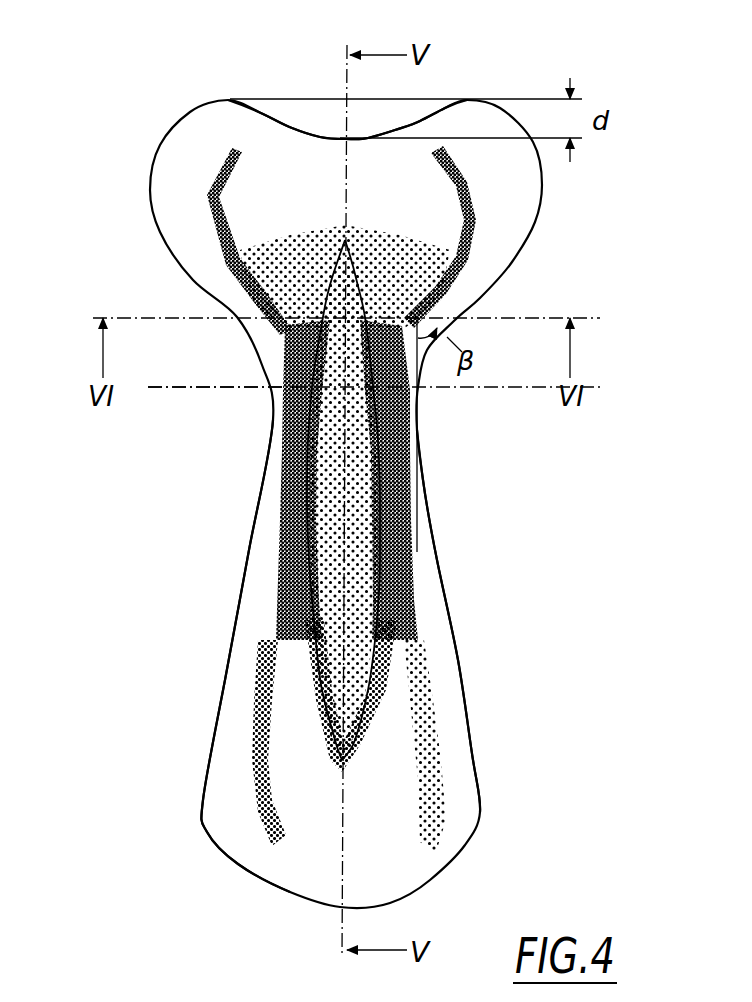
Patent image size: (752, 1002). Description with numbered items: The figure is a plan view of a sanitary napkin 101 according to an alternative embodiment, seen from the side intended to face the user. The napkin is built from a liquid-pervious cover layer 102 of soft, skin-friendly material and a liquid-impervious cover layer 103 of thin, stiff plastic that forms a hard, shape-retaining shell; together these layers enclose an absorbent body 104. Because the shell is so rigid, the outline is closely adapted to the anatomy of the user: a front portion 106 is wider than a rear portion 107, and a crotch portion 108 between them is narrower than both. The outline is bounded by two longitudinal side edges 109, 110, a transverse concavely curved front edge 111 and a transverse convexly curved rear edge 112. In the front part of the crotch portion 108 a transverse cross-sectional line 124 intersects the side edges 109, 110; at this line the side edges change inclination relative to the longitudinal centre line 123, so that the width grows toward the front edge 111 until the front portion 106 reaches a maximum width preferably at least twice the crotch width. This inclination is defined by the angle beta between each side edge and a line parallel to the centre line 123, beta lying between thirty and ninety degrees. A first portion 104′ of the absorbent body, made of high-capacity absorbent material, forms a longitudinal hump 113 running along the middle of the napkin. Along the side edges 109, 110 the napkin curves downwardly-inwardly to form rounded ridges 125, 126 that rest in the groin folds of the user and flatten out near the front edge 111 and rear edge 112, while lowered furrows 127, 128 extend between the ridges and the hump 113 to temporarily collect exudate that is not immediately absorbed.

The sanitary napkin 101 is at (518, 70).
The liquid-pervious cover layer 102 is at (415, 775).
The liquid-impervious cover layer 103 is at (432, 798).
The absorbent body 104 is at (420, 718).
The first portion of the absorbent body 104′ is at (420, 545).
The front portion 106 is at (215, 212).
The rear portion 107 is at (293, 815).
The crotch portion 108 is at (300, 437).
The longitudinal side edge 109 is at (228, 655).
The longitudinal side edge 110 is at (458, 660).
The front edge 111 is at (277, 116).
The rear edge 112 is at (290, 895).
The longitudinal hump 113 is at (415, 432).
The longitudinal centre line 123 is at (342, 83).
The cross-sectional line 124 is at (200, 388).
The rounded ridge 125 is at (262, 551).
The rounded ridge 126 is at (410, 492).
The lowered furrow 127 is at (300, 490).
The lowered furrow 128 is at (400, 517).